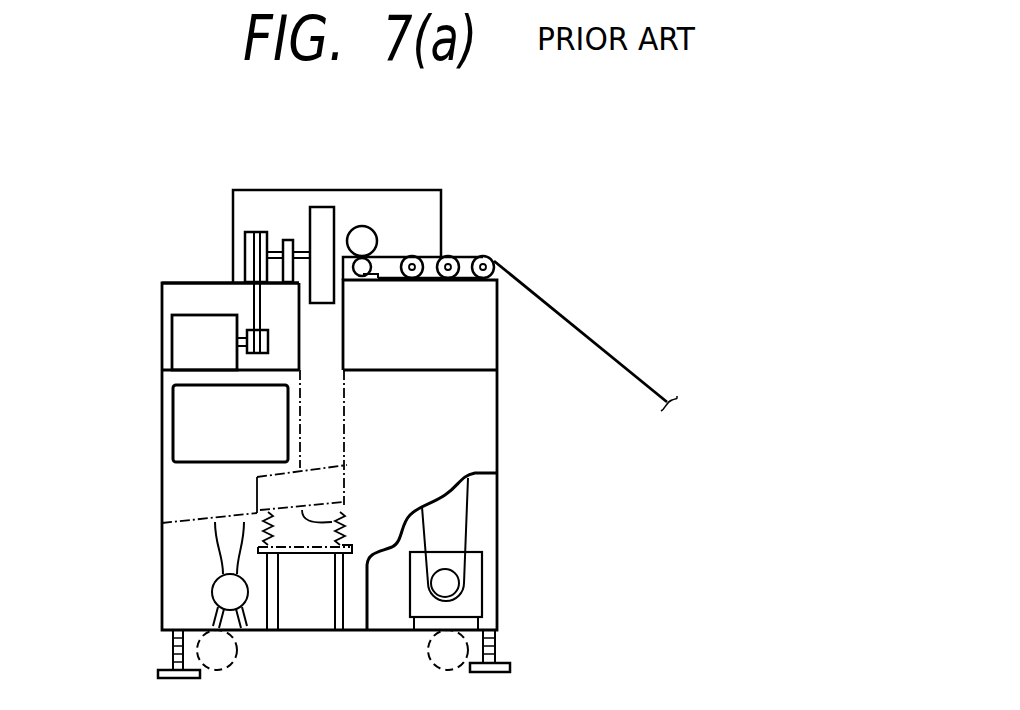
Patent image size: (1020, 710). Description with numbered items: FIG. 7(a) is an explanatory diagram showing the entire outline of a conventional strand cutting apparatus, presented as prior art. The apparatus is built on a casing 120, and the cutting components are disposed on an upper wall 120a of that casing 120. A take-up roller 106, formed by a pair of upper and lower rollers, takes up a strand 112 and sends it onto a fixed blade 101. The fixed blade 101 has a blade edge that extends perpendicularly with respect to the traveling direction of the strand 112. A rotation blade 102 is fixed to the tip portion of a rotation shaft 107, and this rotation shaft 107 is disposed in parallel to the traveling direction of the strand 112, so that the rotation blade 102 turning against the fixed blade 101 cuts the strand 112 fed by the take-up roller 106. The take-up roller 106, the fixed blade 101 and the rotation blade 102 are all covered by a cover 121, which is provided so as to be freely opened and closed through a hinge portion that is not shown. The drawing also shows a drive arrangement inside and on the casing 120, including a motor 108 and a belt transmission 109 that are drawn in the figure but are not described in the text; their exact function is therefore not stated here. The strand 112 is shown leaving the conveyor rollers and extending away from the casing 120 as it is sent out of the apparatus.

The fixed blade 101 is at (345, 255).
The rotation blade 102 is at (318, 207).
The take-up roller 106 is at (362, 237).
The rotation shaft 107 is at (299, 248).
The drive motor 108 is at (173, 355).
The belt transmission 109 is at (240, 290).
The strand 112 is at (597, 343).
The casing 120 is at (160, 487).
The upper wall 120a is at (177, 282).
The cover 121 is at (432, 237).